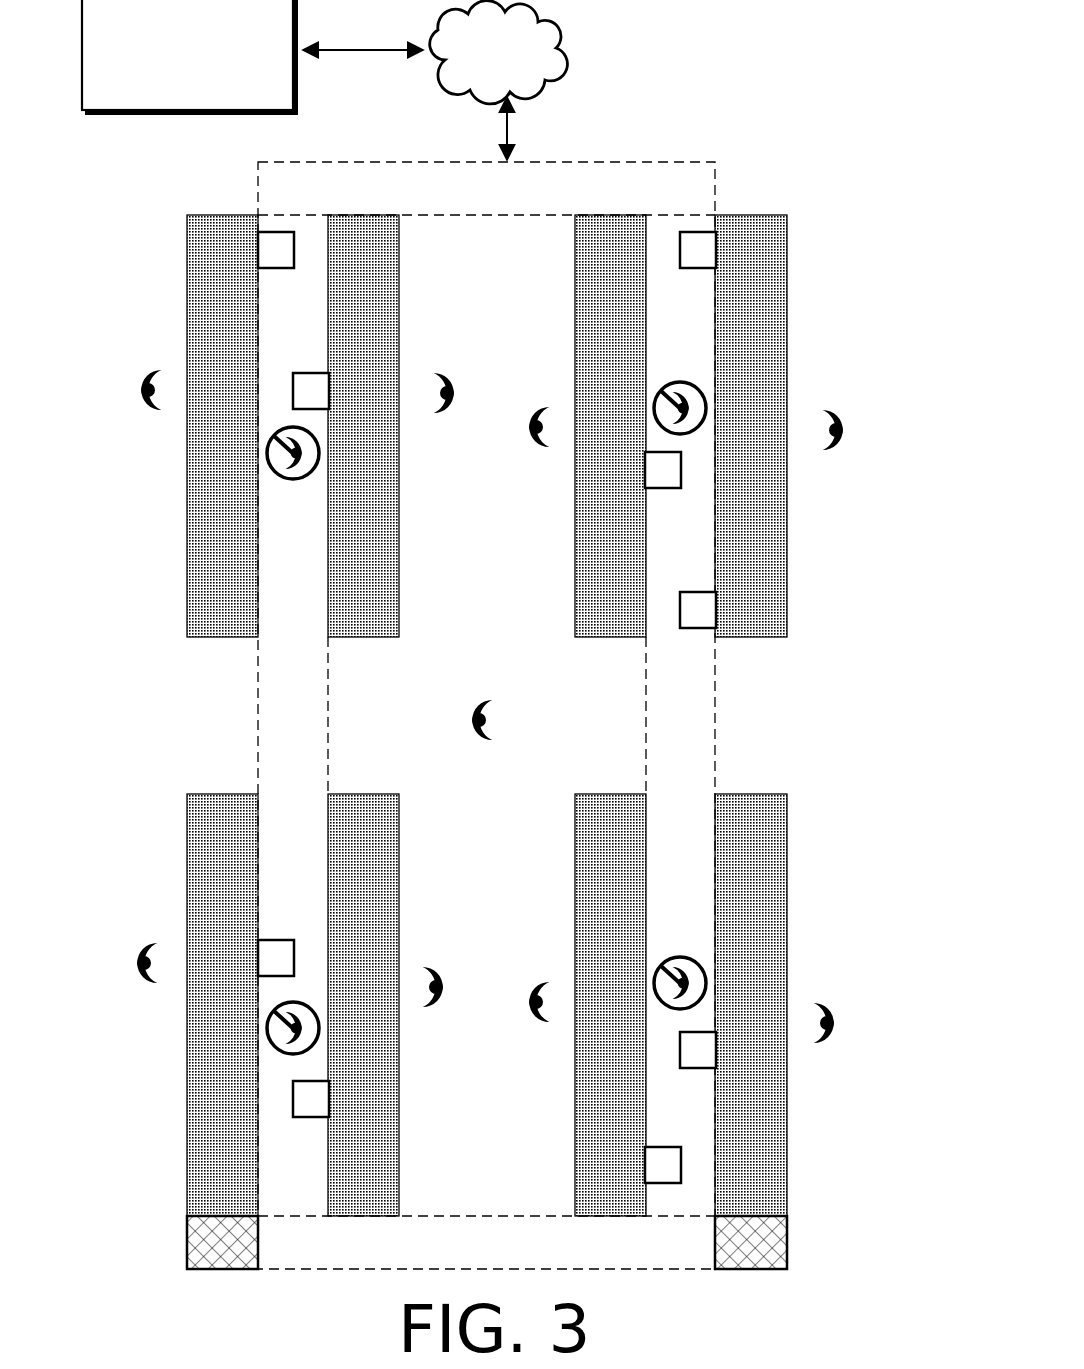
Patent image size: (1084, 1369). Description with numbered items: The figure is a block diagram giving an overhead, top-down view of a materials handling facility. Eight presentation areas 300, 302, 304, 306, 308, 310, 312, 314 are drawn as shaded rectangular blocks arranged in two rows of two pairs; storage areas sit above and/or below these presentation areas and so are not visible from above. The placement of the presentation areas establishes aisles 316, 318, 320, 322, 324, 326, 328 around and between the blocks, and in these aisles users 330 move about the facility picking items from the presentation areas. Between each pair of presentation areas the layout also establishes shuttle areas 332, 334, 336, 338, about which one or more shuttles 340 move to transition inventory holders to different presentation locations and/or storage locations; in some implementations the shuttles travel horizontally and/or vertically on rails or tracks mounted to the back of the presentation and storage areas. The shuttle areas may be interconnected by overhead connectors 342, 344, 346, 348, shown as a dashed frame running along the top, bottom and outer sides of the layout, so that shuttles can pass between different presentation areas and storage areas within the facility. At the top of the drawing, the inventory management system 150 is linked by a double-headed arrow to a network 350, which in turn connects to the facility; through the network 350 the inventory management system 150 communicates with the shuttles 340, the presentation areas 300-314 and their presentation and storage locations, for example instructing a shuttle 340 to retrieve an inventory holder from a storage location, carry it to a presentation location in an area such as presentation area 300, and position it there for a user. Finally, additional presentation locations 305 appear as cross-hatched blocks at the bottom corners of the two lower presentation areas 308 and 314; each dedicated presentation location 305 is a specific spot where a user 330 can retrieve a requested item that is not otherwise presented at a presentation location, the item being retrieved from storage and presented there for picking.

The inventory management system 150 is at (189, 56).
The network 350 is at (476, 77).
The presentation area 300 is at (203, 328).
The presentation area 302 is at (344, 328).
The presentation area 304 is at (591, 328).
The presentation area 306 is at (732, 328).
The presentation area 308 is at (203, 894).
The presentation area 310 is at (344, 894).
The presentation area 312 is at (591, 894).
The presentation area 314 is at (732, 894).
The aisle 316 is at (129, 328).
The aisle 318 is at (463, 328).
The aisle 320 is at (806, 328).
The aisle 322 is at (129, 894).
The aisle 324 is at (463, 894).
The aisle 326 is at (806, 894).
The aisle 328 is at (589, 731).
The shuttle area 332 is at (274, 328).
The shuttle area 334 is at (661, 328).
The shuttle area 336 is at (274, 894).
The shuttle area 338 is at (661, 894).
The user 330 is at (142, 398).
The shuttle 340 is at (272, 232).
The overhead connector 342 is at (258, 712).
The overhead connector 344 is at (715, 705).
The overhead connector 346 is at (468, 203).
The overhead connector 348 is at (622, 1242).
The additional presentation location 305 is at (187, 1245).